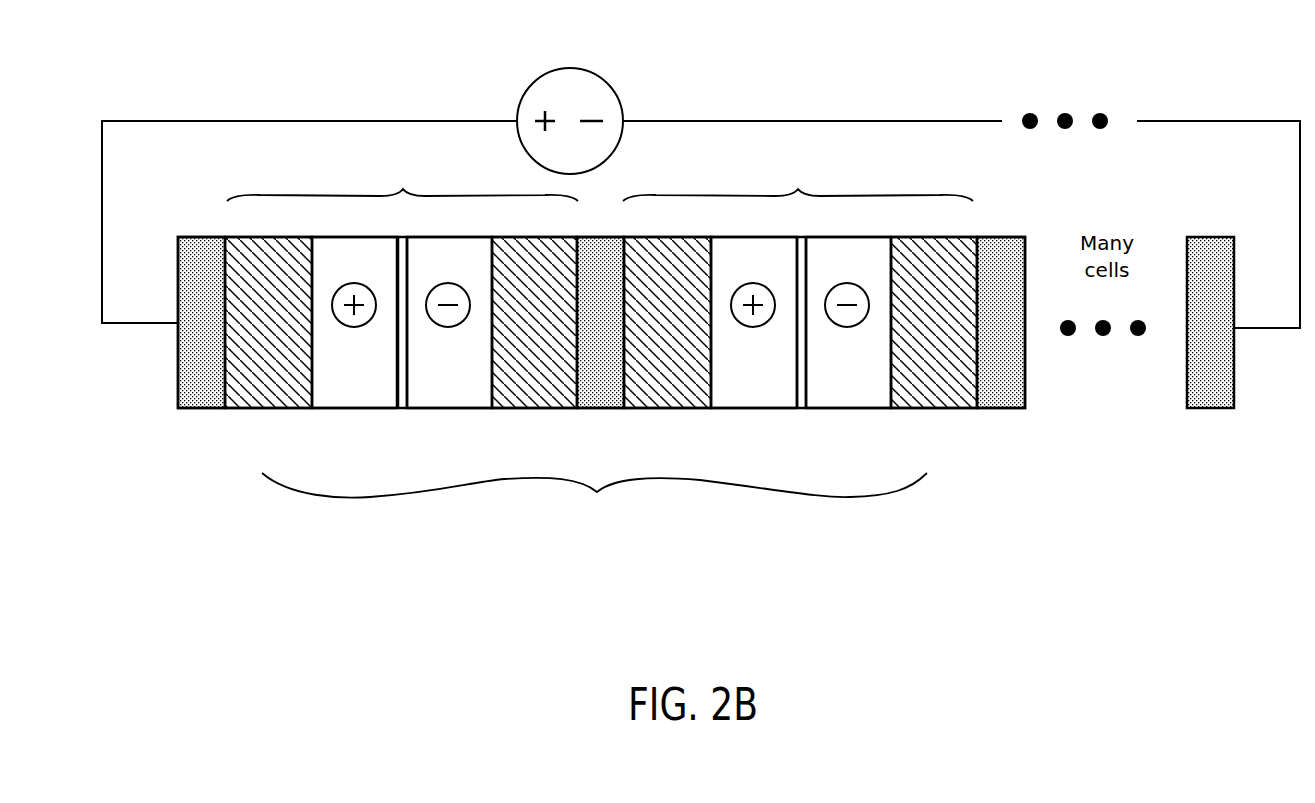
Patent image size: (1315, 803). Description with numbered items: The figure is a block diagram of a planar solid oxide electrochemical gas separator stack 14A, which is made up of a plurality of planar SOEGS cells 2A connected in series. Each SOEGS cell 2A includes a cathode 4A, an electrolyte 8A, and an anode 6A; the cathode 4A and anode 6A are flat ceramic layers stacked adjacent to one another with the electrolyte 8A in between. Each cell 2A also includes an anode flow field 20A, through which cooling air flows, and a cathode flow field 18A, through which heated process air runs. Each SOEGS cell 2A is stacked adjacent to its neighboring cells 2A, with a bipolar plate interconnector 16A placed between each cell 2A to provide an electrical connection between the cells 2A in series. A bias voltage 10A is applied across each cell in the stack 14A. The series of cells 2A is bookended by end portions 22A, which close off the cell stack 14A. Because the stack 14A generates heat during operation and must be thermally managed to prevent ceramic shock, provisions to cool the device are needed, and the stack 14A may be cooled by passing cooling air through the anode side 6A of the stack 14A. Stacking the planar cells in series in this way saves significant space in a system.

The bias voltage 10A is at (608, 80).
The SOEGS cell 2A is at (600, 182).
The end portion 22A is at (198, 383).
The anode flow field 20A is at (270, 382).
The anode 6A is at (363, 390).
The electrolyte 8A is at (402, 398).
The cathode 4A is at (450, 388).
The cathode flow field 18A is at (542, 375).
The interconnector 16A is at (597, 378).
The planar SOEGS stack 14A is at (594, 500).